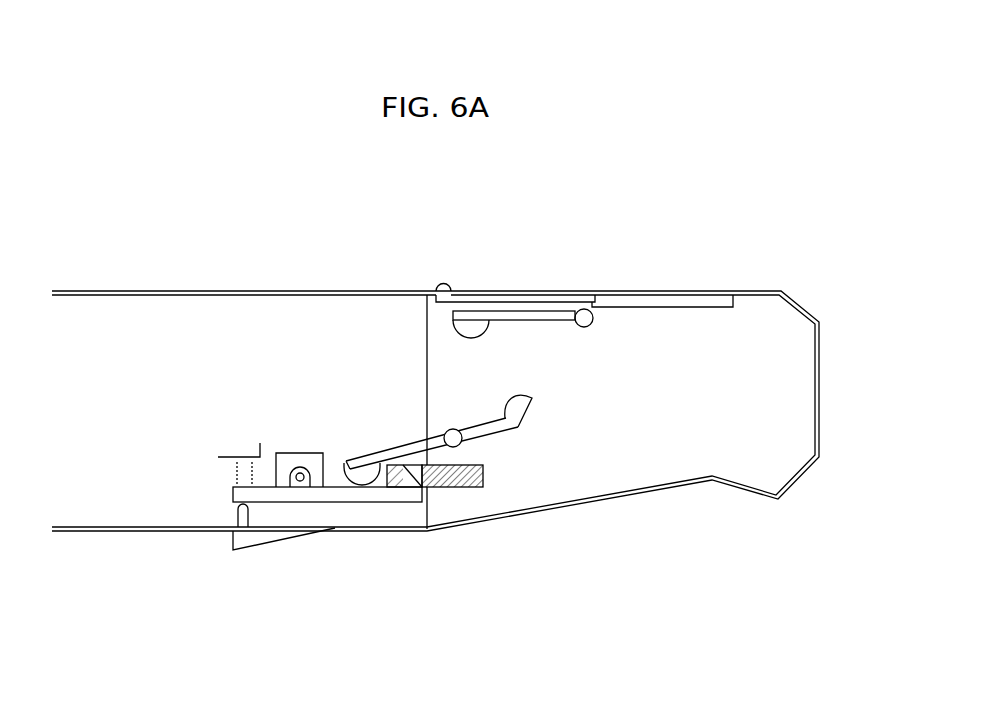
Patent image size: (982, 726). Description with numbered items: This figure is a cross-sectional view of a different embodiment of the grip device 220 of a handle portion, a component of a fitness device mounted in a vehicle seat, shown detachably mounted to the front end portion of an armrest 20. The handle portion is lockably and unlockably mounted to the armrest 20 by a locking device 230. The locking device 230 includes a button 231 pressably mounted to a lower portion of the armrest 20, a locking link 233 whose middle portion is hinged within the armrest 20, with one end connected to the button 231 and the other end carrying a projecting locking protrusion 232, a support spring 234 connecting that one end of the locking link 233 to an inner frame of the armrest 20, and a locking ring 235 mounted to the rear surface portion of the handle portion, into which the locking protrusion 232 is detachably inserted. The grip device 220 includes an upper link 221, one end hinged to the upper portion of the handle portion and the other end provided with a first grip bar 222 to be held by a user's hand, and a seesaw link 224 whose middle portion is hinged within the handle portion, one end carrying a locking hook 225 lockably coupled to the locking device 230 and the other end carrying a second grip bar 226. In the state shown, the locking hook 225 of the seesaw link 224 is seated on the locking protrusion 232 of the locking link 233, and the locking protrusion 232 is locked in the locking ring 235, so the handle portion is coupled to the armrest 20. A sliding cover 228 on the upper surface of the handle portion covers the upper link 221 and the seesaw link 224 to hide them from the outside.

The armrest 20 is at (212, 292).
The grip device 220 is at (534, 440).
The upper link 221 is at (550, 291).
The first grip bar 222 is at (470, 326).
The seesaw link 224 is at (510, 428).
The locking hook 225 is at (366, 476).
The second grip bar 226 is at (532, 404).
The sliding cover 228 is at (493, 300).
The locking device 230 is at (278, 441).
The button 231 is at (245, 537).
The locking protrusion 232 is at (411, 478).
The locking link 233 is at (343, 497).
The support spring 234 is at (237, 471).
The locking ring 235 is at (458, 478).